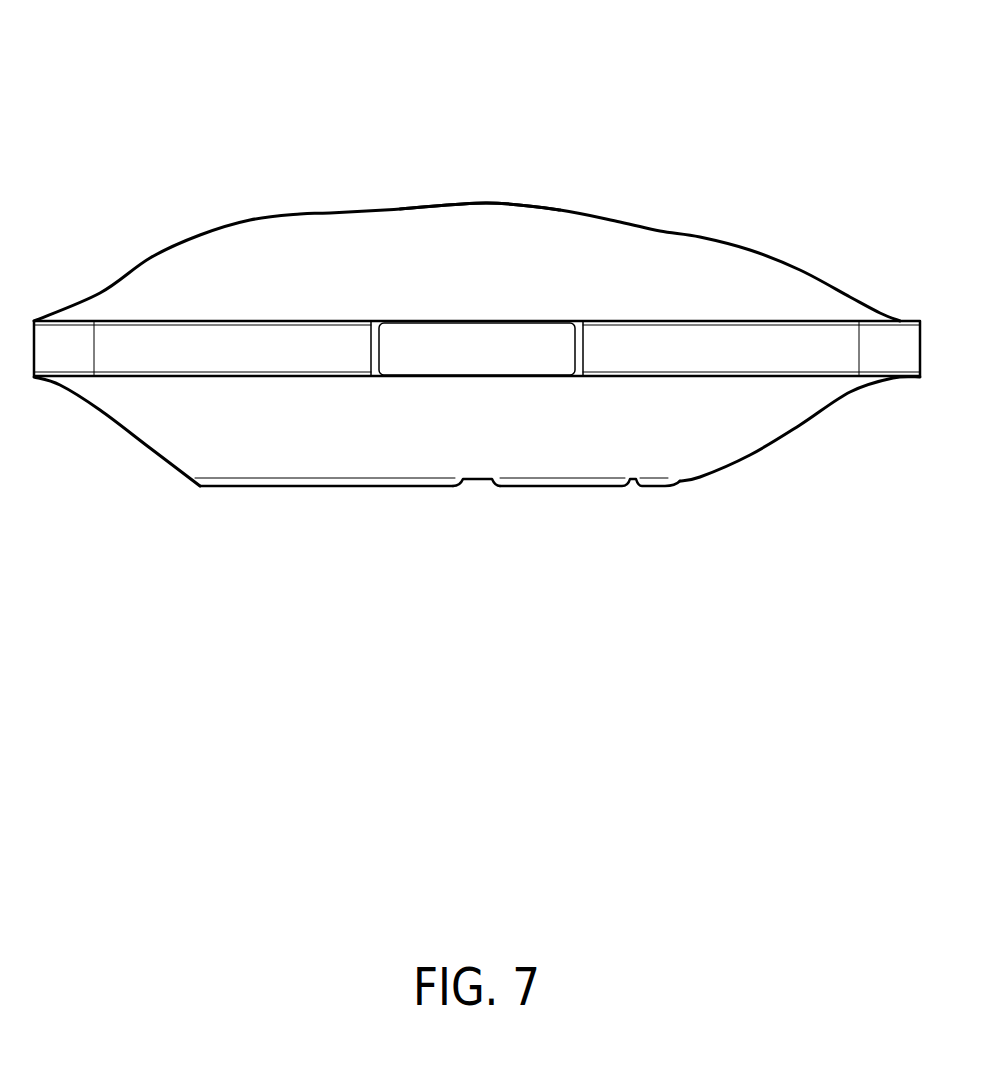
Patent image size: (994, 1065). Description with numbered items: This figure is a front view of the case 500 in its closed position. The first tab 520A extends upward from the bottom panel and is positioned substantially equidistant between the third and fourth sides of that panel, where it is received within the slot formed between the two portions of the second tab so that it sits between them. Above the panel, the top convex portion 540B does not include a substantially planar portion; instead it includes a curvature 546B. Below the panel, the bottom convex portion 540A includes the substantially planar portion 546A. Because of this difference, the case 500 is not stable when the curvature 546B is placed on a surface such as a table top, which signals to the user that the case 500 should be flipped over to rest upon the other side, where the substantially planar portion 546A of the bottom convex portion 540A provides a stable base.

The case 500 is at (63, 119).
The first tab 520A is at (477, 333).
The top convex portion 540B is at (757, 252).
The curvature 546B is at (495, 203).
The bottom convex portion 540A is at (793, 433).
The substantially planar portion 546A is at (478, 484).